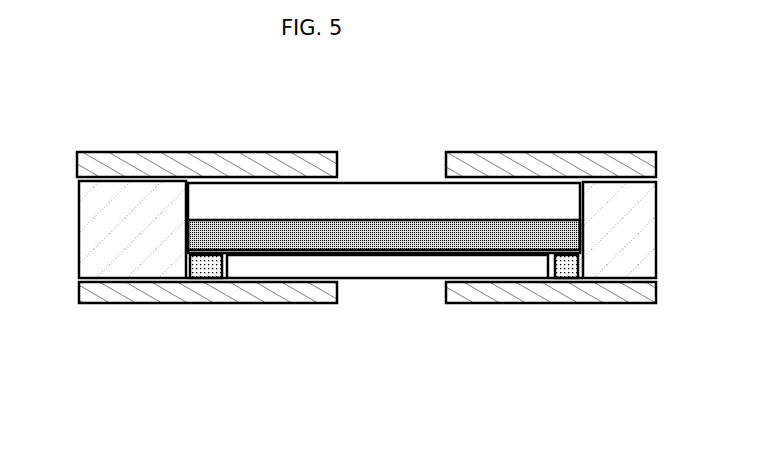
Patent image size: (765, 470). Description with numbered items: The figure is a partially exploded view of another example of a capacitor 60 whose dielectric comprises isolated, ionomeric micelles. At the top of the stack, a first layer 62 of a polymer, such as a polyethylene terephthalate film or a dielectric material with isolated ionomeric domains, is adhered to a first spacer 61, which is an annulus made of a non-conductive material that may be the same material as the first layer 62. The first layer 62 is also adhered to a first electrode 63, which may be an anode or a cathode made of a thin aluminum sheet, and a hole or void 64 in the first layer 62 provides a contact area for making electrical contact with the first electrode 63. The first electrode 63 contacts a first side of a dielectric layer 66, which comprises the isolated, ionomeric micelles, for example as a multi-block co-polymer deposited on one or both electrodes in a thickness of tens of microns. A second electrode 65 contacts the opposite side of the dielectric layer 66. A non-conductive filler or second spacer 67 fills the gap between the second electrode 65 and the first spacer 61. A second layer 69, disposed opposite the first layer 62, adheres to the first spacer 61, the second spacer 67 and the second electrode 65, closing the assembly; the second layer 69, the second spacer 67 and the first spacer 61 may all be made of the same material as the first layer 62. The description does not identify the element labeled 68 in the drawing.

The capacitor 60 is at (110, 108).
The first spacer 61 is at (123, 210).
The first layer 62 is at (232, 158).
The first electrode 63 is at (470, 205).
The hole or void 64 is at (381, 167).
The second electrode 65 is at (228, 302).
The dielectric layer 66 is at (428, 253).
The second spacer 67 is at (198, 282).
The substrate 68 is at (403, 285).
The second layer 69 is at (183, 284).